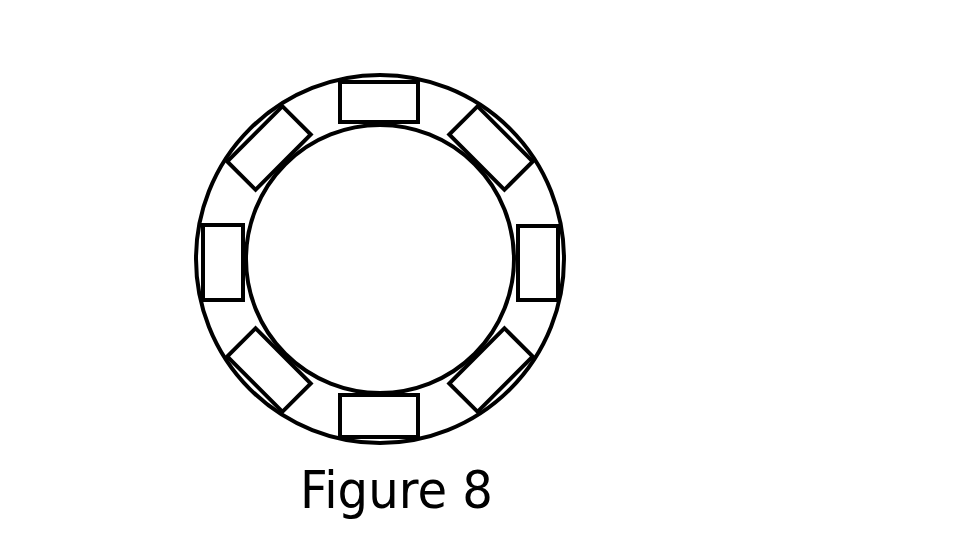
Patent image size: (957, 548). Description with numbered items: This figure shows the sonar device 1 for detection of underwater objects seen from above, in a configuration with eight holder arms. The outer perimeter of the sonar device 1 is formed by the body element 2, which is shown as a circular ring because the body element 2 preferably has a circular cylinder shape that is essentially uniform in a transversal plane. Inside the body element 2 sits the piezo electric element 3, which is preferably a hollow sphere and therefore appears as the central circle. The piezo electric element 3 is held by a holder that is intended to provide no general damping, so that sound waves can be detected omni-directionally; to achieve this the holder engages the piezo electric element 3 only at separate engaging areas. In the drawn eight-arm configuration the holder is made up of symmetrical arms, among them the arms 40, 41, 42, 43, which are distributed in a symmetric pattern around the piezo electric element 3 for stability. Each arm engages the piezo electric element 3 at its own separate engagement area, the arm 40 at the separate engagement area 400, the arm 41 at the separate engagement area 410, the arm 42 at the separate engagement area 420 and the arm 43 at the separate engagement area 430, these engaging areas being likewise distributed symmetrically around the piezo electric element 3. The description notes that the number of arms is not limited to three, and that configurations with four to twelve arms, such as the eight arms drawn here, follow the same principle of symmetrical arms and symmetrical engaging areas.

The sonar device 1 is at (622, 145).
The body element 2 is at (547, 342).
The piezo electric element 3 is at (313, 230).
The arm 40 is at (233, 253).
The separate engagement area 400 is at (240, 268).
The arm 41 is at (383, 420).
The separate engagement area 410 is at (383, 397).
The arm 42 is at (538, 265).
The separate engagement area 420 is at (520, 275).
The arm 43 is at (387, 97).
The separate engagement area 430 is at (387, 115).